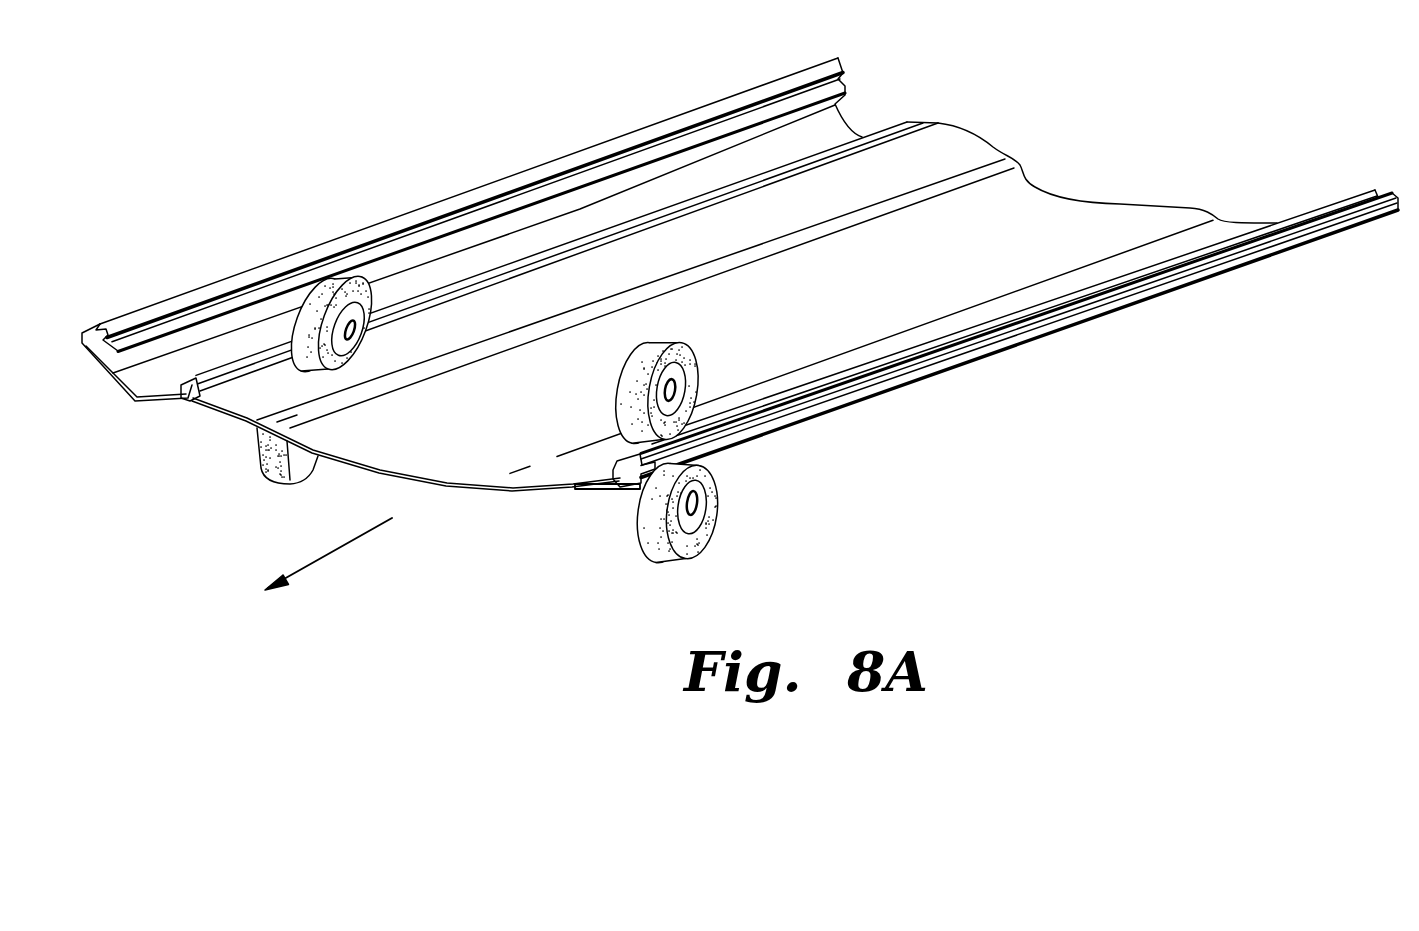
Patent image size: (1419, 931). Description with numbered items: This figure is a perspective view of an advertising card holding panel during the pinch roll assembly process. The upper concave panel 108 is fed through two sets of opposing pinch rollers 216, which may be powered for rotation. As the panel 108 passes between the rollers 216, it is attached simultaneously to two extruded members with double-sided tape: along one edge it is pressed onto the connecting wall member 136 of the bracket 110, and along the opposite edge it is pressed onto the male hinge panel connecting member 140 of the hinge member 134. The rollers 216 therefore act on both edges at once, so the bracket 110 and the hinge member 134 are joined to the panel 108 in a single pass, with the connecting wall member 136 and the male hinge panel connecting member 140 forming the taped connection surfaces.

The upper concave panel 108 is at (550, 399).
The bracket 110 is at (162, 302).
The hinge member 134 is at (947, 372).
The connecting wall member 136 is at (212, 418).
The male hinge panel connecting member 140 is at (583, 490).
The pinch rollers 216 is at (330, 272).